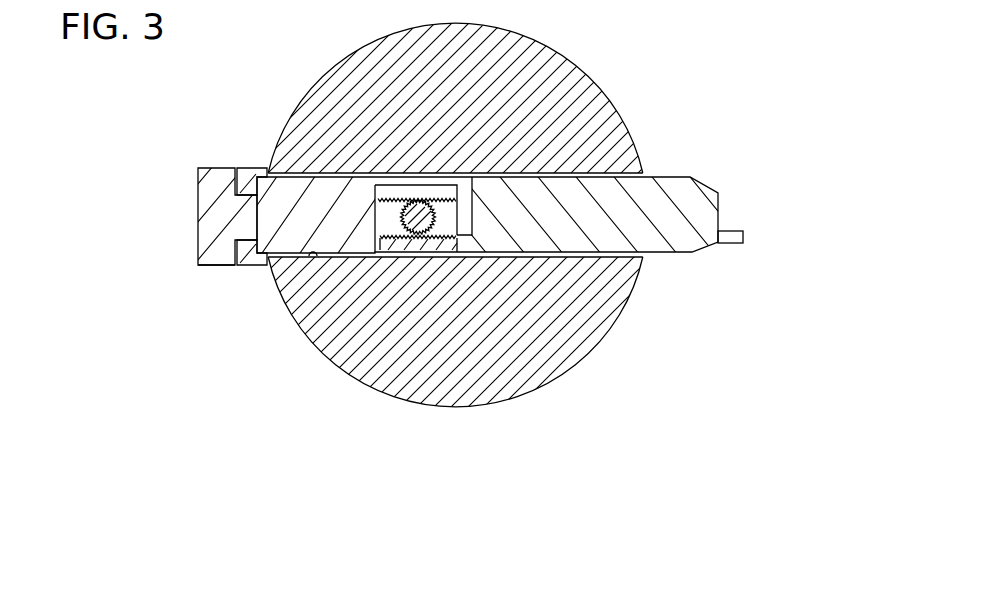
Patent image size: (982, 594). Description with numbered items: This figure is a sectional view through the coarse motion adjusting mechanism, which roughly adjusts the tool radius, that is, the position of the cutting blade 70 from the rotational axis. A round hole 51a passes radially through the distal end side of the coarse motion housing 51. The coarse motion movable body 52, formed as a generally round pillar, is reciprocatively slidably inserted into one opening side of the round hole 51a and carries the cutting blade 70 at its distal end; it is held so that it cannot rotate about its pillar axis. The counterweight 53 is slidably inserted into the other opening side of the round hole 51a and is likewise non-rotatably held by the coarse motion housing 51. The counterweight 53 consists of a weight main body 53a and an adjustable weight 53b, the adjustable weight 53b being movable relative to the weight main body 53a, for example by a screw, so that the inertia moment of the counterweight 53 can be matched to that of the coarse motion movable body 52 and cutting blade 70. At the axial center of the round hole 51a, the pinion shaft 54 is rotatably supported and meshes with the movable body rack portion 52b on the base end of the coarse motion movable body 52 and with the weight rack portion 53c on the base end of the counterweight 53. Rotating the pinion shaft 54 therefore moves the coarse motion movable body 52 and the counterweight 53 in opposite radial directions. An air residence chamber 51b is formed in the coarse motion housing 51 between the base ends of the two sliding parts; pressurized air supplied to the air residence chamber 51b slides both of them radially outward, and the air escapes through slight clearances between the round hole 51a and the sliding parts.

The coarse motion housing 51 is at (580, 363).
The round hole 51a is at (311, 256).
The air residence chamber 51b is at (453, 224).
The coarse motion movable body 52 is at (670, 222).
The movable body rack portion 52b is at (446, 244).
The counterweight 53 is at (197, 242).
The weight main body 53a is at (245, 267).
The adjustable weight 53b is at (212, 267).
The weight rack portion 53c is at (388, 205).
The pinion shaft 54 is at (417, 230).
The cutting blade 70 is at (732, 243).